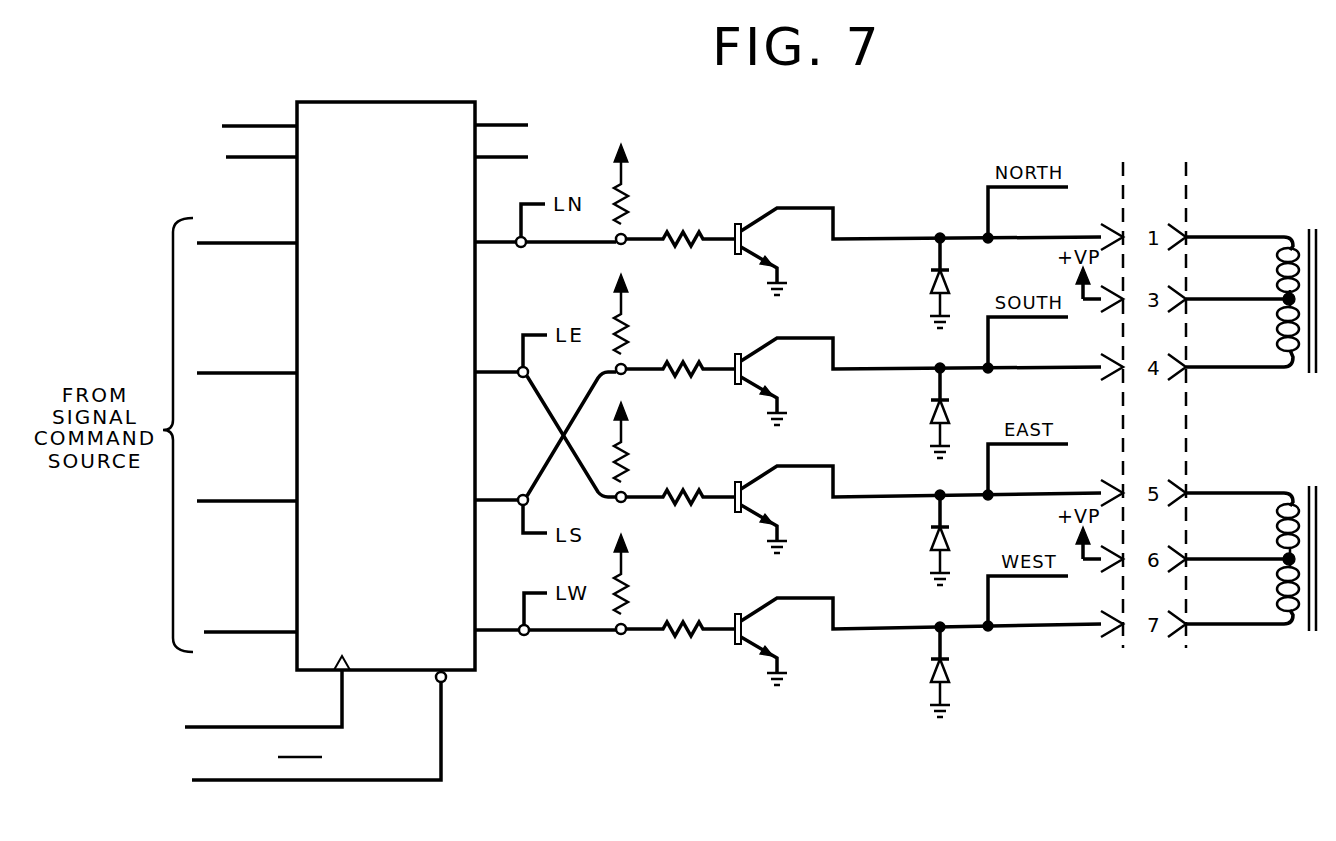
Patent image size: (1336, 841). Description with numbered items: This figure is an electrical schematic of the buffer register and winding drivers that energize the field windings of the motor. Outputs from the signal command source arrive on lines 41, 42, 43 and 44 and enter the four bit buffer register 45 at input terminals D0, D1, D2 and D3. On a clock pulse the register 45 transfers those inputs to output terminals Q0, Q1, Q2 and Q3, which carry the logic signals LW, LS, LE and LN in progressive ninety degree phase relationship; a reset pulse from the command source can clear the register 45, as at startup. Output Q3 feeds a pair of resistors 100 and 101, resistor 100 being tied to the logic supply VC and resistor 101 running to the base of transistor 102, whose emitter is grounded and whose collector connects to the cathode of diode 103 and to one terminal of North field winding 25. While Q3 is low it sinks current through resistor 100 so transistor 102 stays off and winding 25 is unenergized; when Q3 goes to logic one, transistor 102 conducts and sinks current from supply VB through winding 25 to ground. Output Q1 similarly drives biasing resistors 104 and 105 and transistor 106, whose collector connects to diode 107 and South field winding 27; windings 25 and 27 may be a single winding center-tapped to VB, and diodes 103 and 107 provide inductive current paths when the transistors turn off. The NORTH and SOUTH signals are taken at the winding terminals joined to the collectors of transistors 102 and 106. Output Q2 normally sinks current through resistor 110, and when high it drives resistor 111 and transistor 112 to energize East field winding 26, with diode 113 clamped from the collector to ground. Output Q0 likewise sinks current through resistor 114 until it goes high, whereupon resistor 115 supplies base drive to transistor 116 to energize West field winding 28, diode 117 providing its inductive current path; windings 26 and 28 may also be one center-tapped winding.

The 4 bit buffer register 45 is at (378, 102).
The line 44 is at (227, 243).
The line 43 is at (229, 373).
The line 42 is at (230, 501).
The line 41 is at (229, 632).
The resistor 100 is at (626, 196).
The resistor 101 is at (678, 236).
The transistor 102 is at (744, 236).
The diode 103 is at (948, 281).
The resistor 104 is at (626, 326).
The resistor 105 is at (678, 366).
The transistor 106 is at (744, 366).
The diode 107 is at (948, 411).
The resistor 110 is at (626, 454).
The resistor 111 is at (678, 494).
The transistor 112 is at (744, 494).
The diode 113 is at (948, 538).
The resistor 114 is at (626, 586).
The resistor 115 is at (678, 626).
The transistor 116 is at (744, 626).
The diode 117 is at (948, 670).
The North field winding 25 is at (1278, 268).
The South field winding 27 is at (1278, 330).
The East field winding 26 is at (1278, 525).
The West field winding 28 is at (1278, 592).